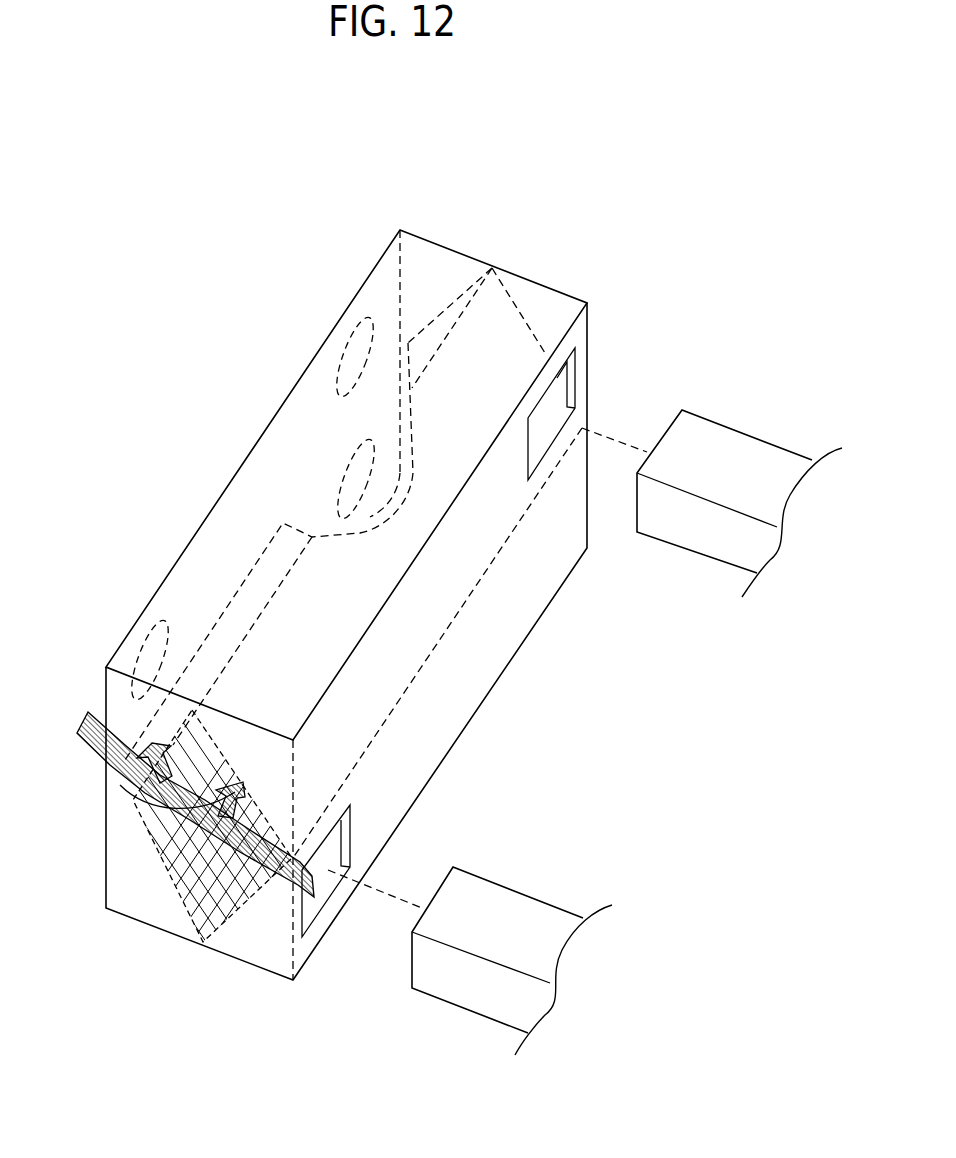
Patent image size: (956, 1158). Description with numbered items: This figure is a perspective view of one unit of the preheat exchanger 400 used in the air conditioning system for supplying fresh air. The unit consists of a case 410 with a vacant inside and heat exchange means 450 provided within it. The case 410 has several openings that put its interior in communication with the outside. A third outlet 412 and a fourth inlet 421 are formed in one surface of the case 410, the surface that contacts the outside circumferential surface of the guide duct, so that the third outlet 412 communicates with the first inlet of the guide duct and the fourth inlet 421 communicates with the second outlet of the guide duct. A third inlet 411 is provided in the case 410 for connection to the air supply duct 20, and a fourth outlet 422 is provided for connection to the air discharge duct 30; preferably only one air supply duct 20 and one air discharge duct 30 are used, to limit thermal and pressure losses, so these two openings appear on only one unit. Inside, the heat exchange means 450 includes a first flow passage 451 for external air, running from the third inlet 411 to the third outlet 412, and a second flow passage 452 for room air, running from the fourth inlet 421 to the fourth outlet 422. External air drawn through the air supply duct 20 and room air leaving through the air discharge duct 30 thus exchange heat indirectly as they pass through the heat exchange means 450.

The preheat exchanger 400 is at (105, 285).
The case 410 is at (448, 248).
The third inlet 411 is at (340, 836).
The third outlet 412 is at (353, 353).
The fourth inlet 421 is at (350, 483).
The fourth outlet 422 is at (557, 398).
The heat exchange means 450 is at (150, 873).
The first flow passage 451 is at (277, 887).
The second flow passage 452 is at (88, 750).
The air supply duct 20 is at (517, 905).
The air discharge duct 30 is at (745, 448).